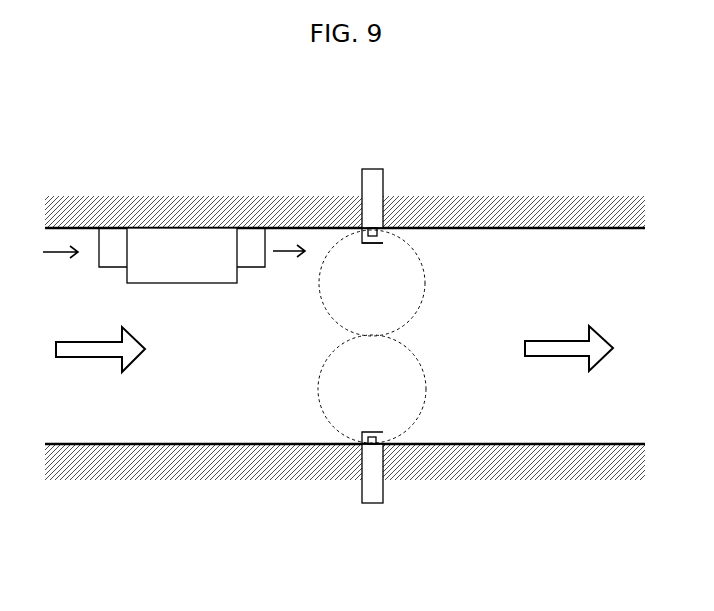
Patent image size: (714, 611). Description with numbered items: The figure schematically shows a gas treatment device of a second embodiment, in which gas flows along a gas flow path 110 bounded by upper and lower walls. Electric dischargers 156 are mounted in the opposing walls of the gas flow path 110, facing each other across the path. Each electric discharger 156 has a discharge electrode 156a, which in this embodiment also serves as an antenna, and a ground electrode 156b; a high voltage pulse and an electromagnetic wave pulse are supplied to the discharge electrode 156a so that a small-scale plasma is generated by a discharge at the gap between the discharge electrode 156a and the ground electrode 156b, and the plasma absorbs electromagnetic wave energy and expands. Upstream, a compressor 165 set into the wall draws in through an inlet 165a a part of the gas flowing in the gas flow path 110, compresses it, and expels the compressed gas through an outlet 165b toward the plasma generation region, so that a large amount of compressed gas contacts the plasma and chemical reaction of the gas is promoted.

The gas flow path 110 is at (535, 240).
The electric discharger 156 is at (372, 168).
The discharge electrode 156a is at (380, 232).
The ground electrode 156b is at (378, 244).
The compressor 165 is at (187, 240).
The inlet 165a is at (112, 240).
The outlet 165b is at (250, 240).